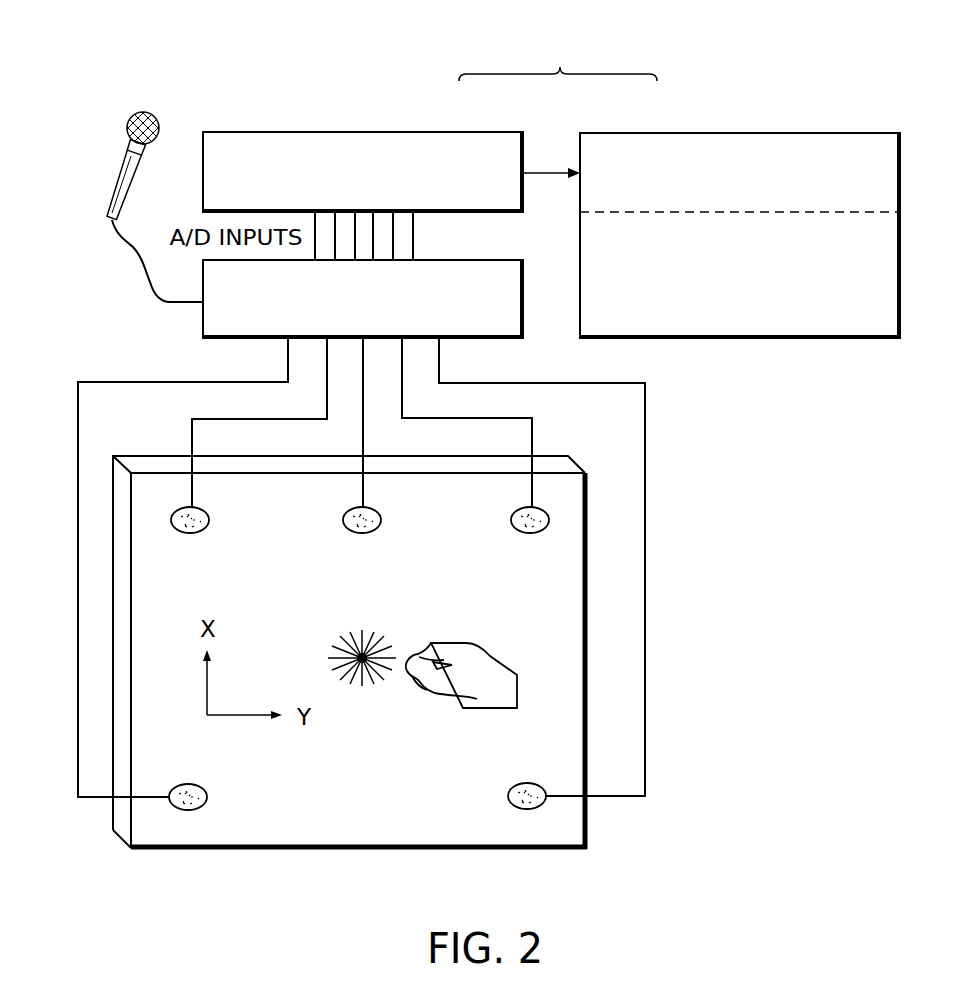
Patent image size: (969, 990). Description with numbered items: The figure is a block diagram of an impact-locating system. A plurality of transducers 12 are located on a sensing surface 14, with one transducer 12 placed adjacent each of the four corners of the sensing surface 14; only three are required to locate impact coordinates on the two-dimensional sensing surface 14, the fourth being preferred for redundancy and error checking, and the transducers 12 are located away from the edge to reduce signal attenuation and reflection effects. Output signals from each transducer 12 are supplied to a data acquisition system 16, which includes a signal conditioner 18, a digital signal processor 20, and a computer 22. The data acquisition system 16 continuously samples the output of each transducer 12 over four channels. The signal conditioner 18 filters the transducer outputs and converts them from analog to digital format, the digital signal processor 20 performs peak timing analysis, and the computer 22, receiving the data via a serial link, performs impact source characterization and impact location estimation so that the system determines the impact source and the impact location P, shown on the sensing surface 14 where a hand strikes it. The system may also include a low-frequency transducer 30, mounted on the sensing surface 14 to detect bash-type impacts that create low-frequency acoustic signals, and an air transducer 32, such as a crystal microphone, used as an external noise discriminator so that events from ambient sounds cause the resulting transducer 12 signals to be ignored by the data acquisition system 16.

The transducers 12 is at (191, 535).
The sensing surface 14 is at (567, 653).
The data acquisition system 16 is at (558, 61).
The signal conditioner 18 is at (500, 260).
The digital signal processor 20 is at (448, 133).
The computer 22 is at (605, 133).
The low-frequency transducer 30 is at (362, 535).
The air transducer 32 is at (133, 112).
The impact location P is at (368, 633).